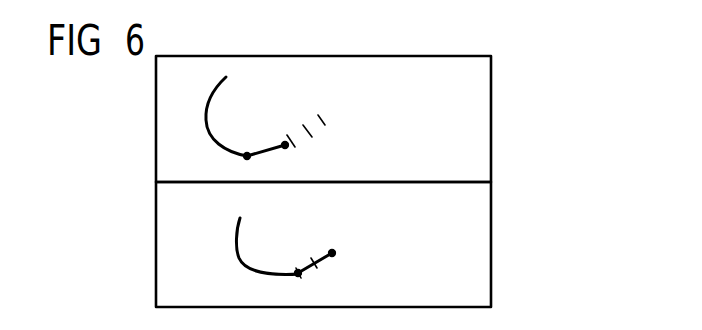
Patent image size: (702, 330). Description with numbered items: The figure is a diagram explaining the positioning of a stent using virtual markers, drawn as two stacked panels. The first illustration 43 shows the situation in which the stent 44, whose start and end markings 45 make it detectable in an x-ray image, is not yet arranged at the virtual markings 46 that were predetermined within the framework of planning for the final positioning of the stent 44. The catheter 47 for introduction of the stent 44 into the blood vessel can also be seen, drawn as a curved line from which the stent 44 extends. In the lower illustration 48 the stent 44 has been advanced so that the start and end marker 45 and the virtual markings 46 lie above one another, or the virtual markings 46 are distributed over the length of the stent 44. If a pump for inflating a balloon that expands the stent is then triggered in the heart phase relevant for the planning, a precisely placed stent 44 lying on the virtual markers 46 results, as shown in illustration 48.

The first illustration 43 is at (491, 125).
The illustration 48 is at (492, 255).
The catheter 47 is at (206, 117).
The stent 44 is at (278, 150).
The start and end markings 45 is at (248, 152).
The virtual markings 46 is at (312, 137).